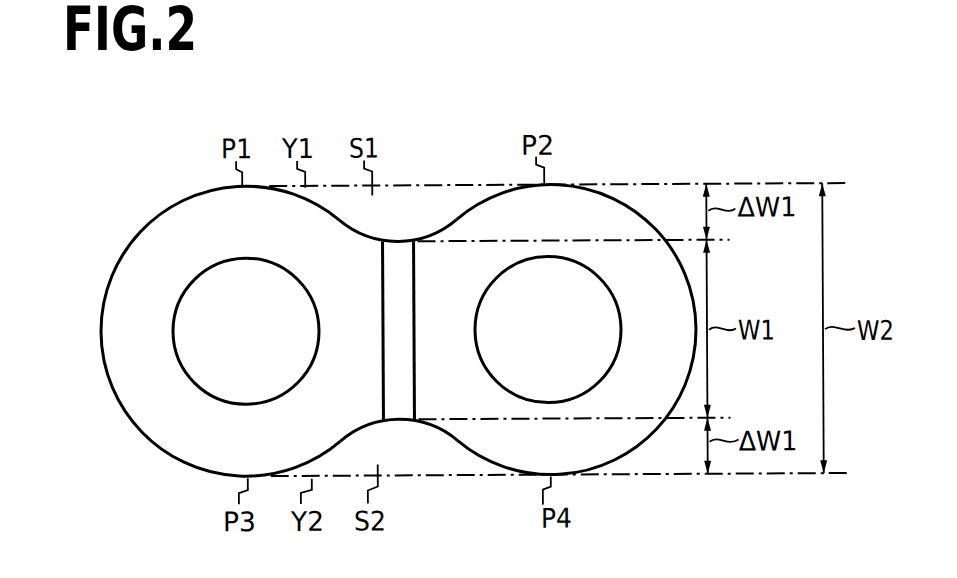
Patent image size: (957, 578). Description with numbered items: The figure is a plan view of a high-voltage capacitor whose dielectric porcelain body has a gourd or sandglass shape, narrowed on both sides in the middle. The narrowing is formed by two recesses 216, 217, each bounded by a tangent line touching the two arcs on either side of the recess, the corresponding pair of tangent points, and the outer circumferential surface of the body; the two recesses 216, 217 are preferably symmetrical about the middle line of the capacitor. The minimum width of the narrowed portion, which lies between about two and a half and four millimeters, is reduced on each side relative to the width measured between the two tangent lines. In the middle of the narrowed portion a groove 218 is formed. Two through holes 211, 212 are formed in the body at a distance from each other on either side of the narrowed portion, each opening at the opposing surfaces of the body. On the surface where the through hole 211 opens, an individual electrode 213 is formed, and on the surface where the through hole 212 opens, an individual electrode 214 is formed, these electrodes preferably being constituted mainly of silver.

The through hole 211 is at (242, 385).
The through hole 212 is at (549, 383).
The individual electrode 213 is at (168, 227).
The individual electrode 214 is at (615, 224).
The recess 216 is at (445, 226).
The recess 217 is at (453, 444).
The groove 218 is at (396, 412).